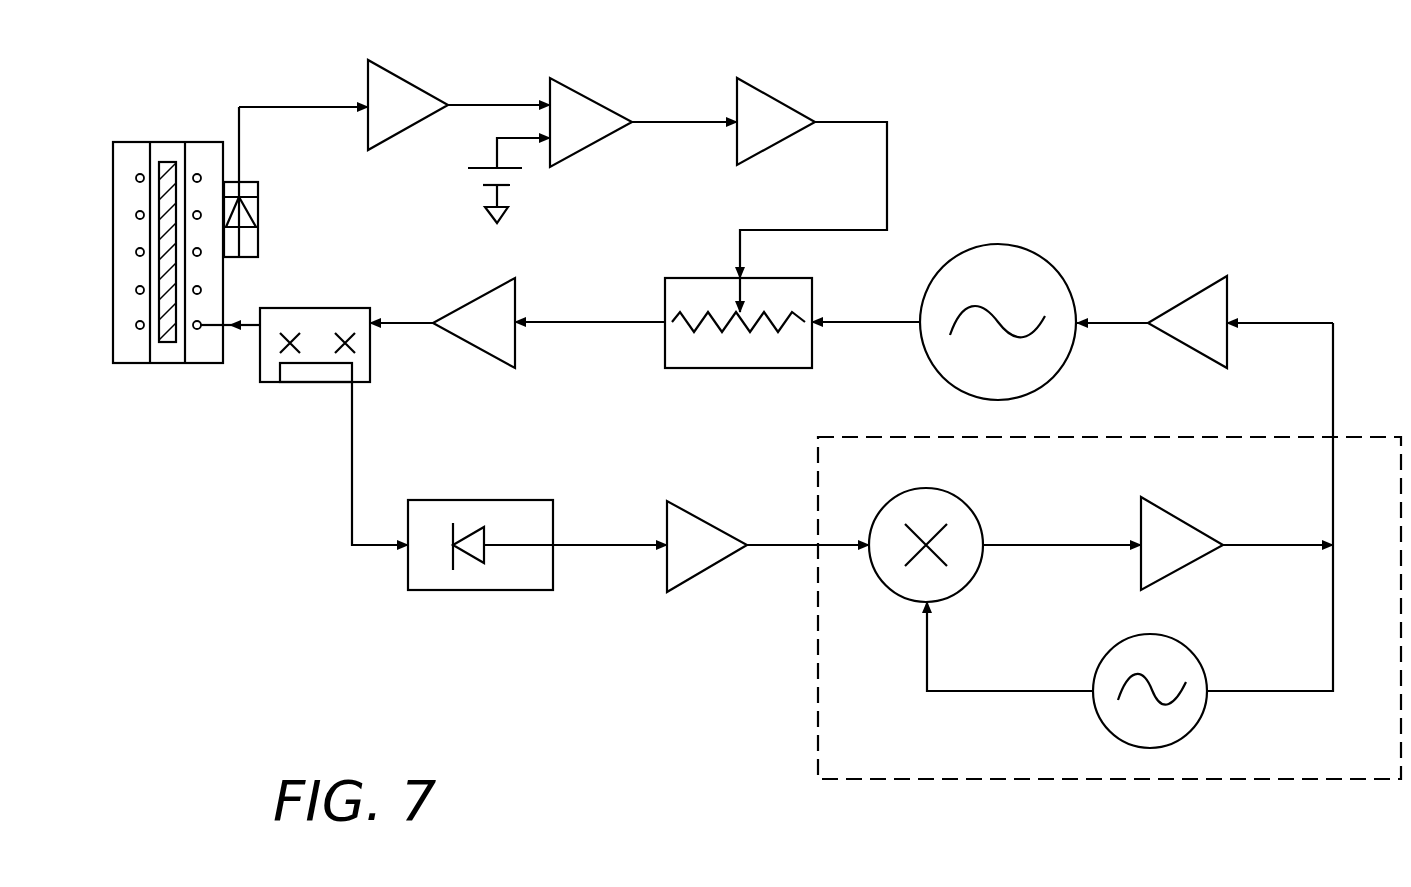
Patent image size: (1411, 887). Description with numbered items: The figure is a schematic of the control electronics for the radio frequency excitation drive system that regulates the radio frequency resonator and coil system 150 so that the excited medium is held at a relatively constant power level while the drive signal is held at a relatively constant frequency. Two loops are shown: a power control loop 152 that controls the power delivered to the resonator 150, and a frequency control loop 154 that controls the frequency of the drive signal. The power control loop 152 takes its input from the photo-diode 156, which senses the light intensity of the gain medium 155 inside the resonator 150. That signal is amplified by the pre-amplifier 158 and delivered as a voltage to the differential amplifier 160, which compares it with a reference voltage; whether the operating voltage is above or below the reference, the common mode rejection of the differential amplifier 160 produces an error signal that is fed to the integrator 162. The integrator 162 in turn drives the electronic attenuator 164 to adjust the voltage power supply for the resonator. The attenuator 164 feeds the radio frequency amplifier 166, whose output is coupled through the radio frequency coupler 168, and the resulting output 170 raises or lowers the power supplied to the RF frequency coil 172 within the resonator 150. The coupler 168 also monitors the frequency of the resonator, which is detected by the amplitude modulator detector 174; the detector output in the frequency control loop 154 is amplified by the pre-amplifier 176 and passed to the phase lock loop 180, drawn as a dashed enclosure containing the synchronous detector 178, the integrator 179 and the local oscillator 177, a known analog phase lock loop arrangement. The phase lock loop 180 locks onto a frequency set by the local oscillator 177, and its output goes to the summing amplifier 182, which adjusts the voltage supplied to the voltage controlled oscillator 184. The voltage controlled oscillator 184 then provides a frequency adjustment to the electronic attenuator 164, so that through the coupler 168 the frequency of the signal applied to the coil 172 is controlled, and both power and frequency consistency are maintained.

The radio frequency resonator and coil system 150 is at (100, 180).
The power control loop 152 is at (912, 155).
The frequency control loop 154 is at (695, 328).
The gain medium 155 is at (160, 160).
The photo-diode 156 is at (246, 213).
The pre-amplifier 158 is at (410, 88).
The differential amplifier 160 is at (580, 95).
The integrator 162 is at (784, 101).
The electronic attenuator 164 is at (686, 278).
The radio frequency amplifier 166 is at (472, 344).
The radio frequency coupler 168 is at (362, 308).
The output 170 is at (231, 320).
The RF frequency coil 172 is at (136, 326).
The amplitude modulator detector 174 is at (450, 591).
The pre-amplifier 176 is at (690, 511).
The local oscillator 177 is at (1196, 651).
The synchronous detector 178 is at (934, 489).
The integrator 179 is at (1186, 521).
The phase lock loop 180 is at (1109, 575).
The summing amplifier 182 is at (1185, 295).
The voltage controlled oscillator 184 is at (1020, 245).